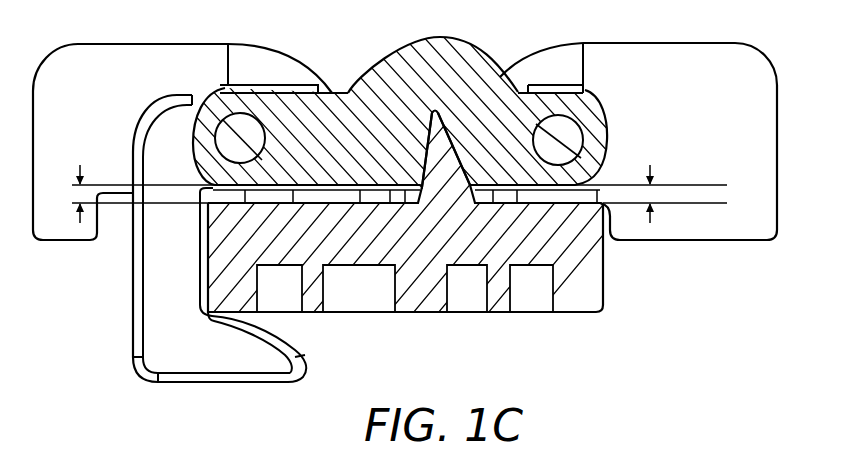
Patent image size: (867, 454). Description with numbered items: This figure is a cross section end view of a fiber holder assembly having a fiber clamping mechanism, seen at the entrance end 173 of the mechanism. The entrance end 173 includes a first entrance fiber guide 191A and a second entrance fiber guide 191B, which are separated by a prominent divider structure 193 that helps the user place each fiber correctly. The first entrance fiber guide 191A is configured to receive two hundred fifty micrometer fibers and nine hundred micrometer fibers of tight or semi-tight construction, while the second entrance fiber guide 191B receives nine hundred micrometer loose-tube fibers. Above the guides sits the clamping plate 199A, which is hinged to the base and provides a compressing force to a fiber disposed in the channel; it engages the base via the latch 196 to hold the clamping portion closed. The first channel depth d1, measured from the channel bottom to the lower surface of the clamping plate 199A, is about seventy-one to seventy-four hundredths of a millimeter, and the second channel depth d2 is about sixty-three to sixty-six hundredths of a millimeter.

The clamping plate 199A is at (399, 67).
The prominent divider structure 193 is at (437, 143).
The latch 196 is at (158, 272).
The first entrance fiber guide 191A is at (403, 192).
The entrance end 173 is at (448, 243).
The second entrance fiber guide 191B is at (488, 197).
The first channel depth d1 is at (129, 194).
The second channel depth d2 is at (665, 194).